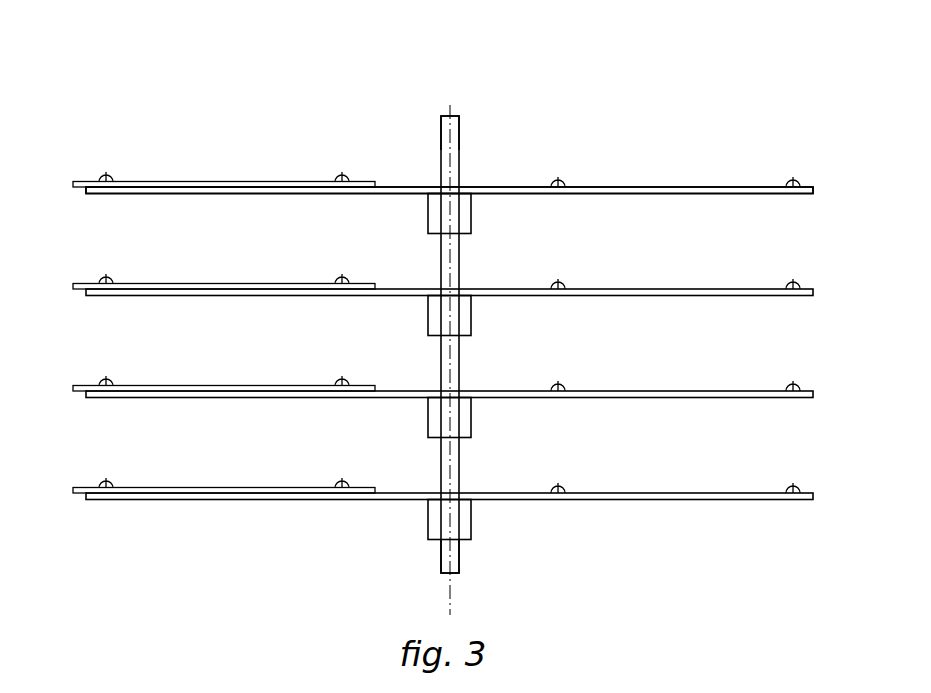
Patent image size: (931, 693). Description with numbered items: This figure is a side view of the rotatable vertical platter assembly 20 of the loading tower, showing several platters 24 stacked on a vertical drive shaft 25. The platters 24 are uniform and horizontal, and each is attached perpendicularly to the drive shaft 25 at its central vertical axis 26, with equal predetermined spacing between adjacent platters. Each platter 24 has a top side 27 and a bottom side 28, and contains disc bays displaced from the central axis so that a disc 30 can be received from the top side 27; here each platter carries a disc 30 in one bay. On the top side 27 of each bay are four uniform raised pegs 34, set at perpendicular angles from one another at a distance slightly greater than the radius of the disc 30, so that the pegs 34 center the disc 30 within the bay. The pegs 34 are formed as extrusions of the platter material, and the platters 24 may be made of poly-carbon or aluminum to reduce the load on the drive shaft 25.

The rotatable vertical platter assembly 20 is at (438, 557).
The platter 24 is at (97, 498).
The drive shaft 25 is at (459, 155).
The central vertical axis 26 is at (448, 116).
The top side 27 is at (398, 188).
The bottom side 28 is at (732, 196).
The disc 30 is at (90, 183).
The raised peg 34 is at (793, 285).